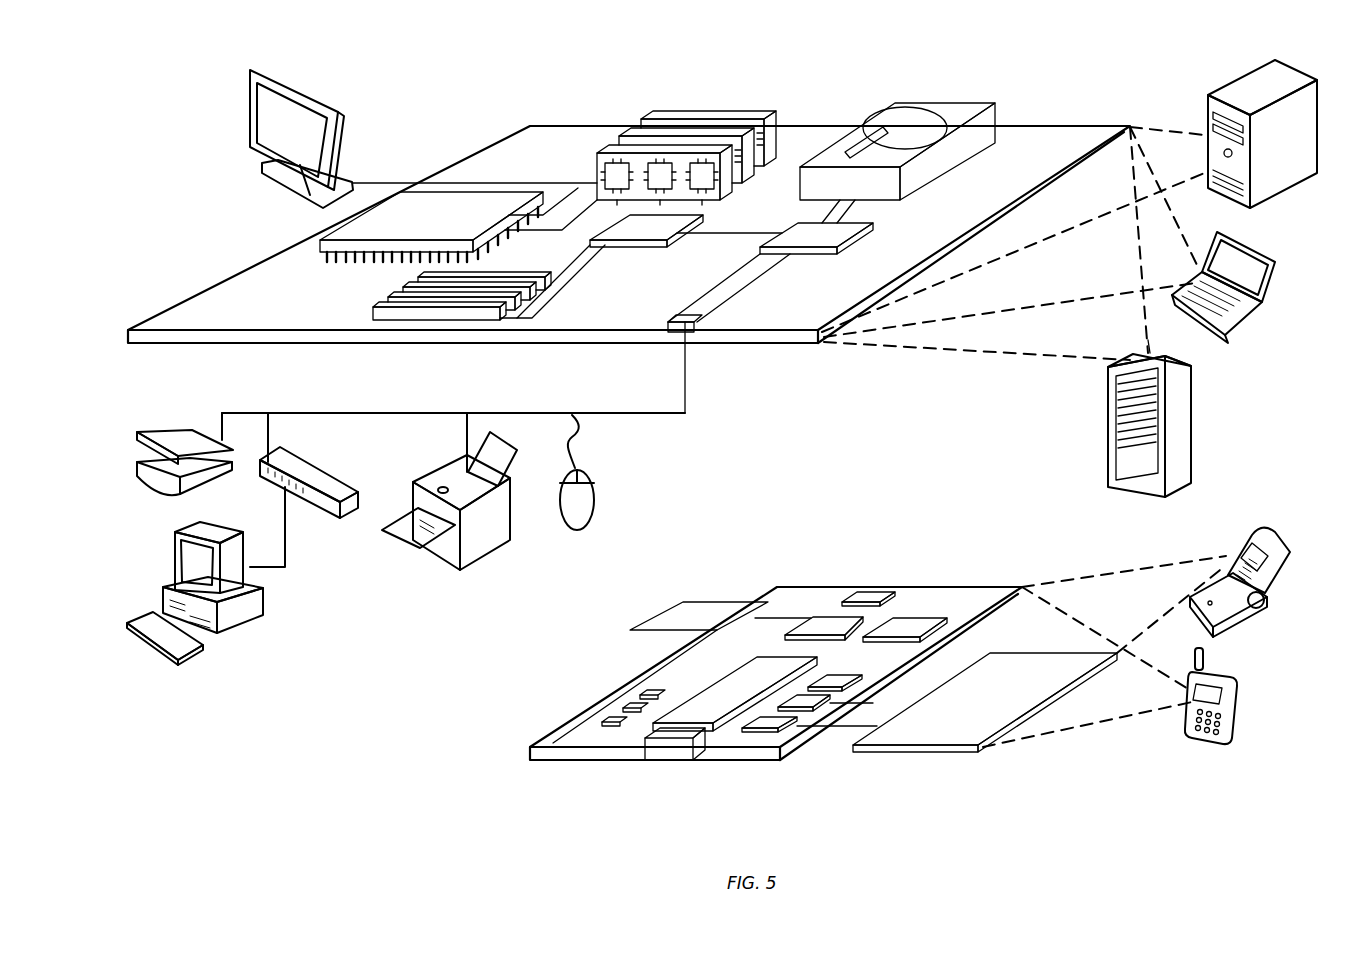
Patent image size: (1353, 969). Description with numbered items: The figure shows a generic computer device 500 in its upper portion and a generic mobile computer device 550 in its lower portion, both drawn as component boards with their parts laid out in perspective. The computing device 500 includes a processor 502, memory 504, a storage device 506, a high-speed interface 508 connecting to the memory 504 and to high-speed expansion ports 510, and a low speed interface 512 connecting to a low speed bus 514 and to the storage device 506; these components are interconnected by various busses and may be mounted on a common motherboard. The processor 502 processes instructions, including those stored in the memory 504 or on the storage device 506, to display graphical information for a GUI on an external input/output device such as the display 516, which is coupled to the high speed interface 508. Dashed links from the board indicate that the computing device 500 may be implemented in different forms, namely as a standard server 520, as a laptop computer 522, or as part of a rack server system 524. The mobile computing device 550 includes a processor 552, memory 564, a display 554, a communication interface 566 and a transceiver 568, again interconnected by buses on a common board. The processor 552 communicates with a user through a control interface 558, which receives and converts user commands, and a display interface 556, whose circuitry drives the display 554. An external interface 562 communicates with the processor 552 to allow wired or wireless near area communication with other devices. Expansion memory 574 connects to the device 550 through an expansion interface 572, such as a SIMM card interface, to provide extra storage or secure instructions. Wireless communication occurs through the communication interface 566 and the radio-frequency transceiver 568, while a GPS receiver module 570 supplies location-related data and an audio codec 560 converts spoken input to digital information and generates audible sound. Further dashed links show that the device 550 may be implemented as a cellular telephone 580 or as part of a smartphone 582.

The computing device 500 is at (448, 96).
The processor 502 is at (327, 246).
The memory 504 is at (657, 113).
The storage device 506 is at (893, 105).
The high-speed interface 508 is at (623, 228).
The high-speed expansion ports 510 is at (397, 302).
The low speed interface 512 is at (800, 230).
The low speed bus 514 is at (695, 332).
The display 516 is at (253, 71).
The standard server 520 is at (1204, 113).
The laptop computer 522 is at (1273, 262).
The rack server system 524 is at (1108, 450).
The mobile computing device 550 is at (500, 760).
The processor 552 is at (707, 717).
The display 554 is at (945, 733).
The display interface 556 is at (777, 722).
The control interface 558 is at (807, 702).
The audio codec 560 is at (835, 680).
The external interface 562 is at (672, 745).
The memory 564 is at (630, 707).
The communication interface 566 is at (827, 625).
The transceiver 568 is at (903, 625).
The GPS receiver module 570 is at (880, 592).
The expansion interface 572 is at (753, 601).
The expansion memory 574 is at (683, 602).
The cellular telephone 580 is at (1239, 538).
The smartphone 582 is at (1186, 705).